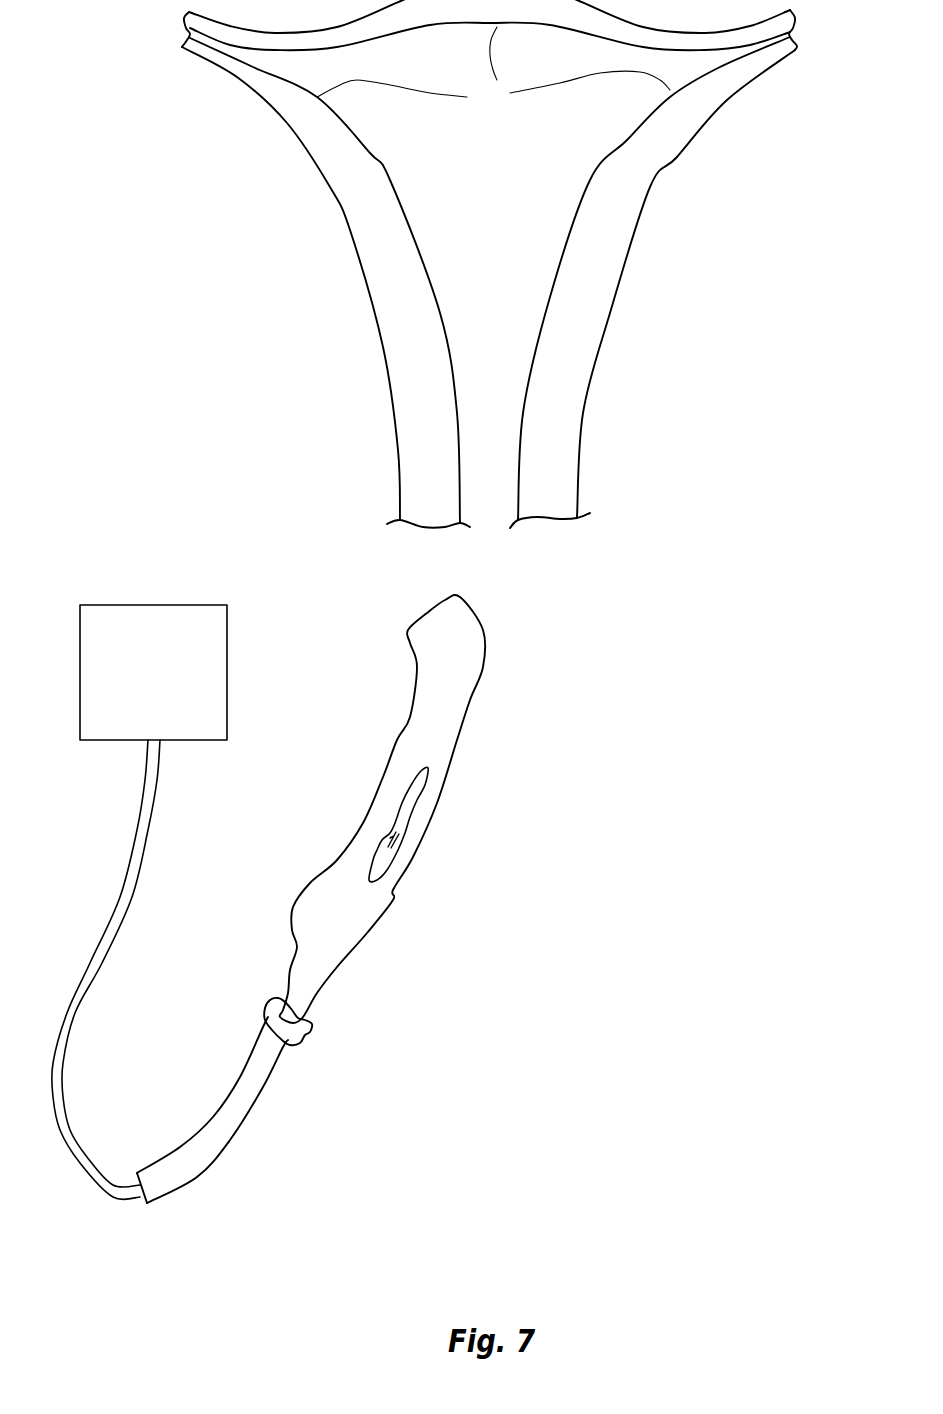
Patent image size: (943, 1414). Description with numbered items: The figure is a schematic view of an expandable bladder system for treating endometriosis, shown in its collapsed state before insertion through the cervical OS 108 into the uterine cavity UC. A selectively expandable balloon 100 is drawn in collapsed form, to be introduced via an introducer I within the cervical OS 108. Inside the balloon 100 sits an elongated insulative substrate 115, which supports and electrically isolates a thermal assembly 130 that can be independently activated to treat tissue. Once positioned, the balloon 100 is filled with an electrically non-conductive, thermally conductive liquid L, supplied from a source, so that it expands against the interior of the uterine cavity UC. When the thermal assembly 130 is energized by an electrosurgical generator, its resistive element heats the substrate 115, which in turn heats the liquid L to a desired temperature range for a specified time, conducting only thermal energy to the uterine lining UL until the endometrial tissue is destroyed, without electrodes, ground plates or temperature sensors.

The cervical OS 108 is at (489, 284).
The selectively expandable balloon 100 is at (475, 693).
The insulative substrate 115 is at (410, 822).
The thermal assembly 130 is at (397, 840).
The introducer I is at (223, 1140).
The liquid L is at (139, 902).
The uterine lining UL is at (489, 98).
The uterine cavity UC is at (490, 168).